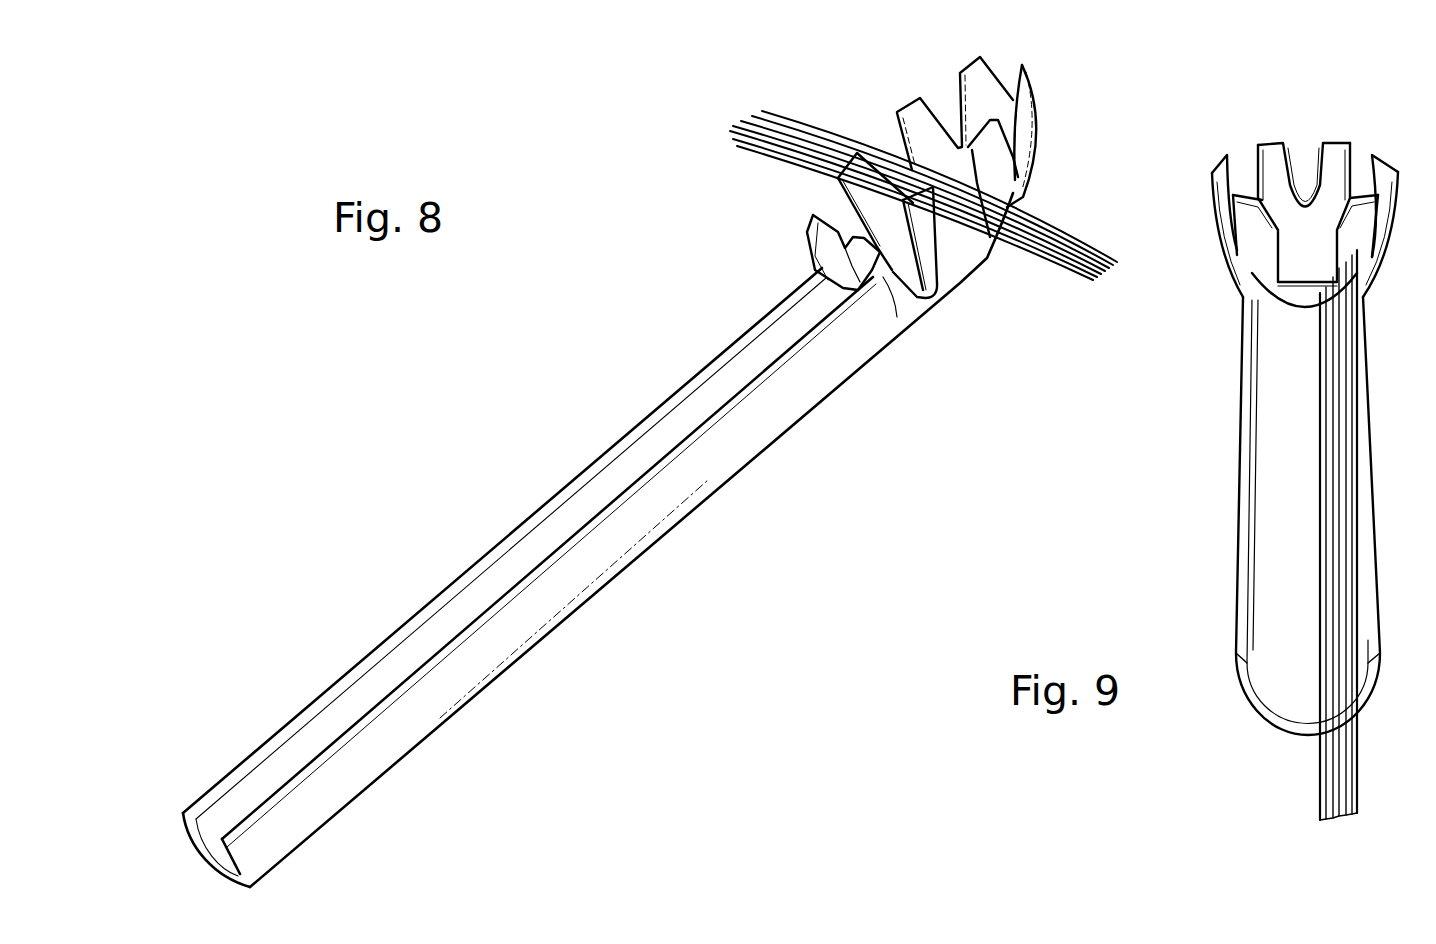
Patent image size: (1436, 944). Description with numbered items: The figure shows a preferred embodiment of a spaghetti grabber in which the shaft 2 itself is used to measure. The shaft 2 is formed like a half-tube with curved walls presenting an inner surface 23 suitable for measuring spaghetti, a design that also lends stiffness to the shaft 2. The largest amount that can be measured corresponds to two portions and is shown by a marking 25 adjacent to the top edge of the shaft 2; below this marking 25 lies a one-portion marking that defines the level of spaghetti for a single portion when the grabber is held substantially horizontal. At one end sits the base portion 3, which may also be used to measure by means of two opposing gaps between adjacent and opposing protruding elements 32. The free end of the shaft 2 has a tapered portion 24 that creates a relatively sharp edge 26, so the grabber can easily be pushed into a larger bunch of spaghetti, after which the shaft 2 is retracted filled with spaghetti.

In FIG. 8, the shaft 2 is at (670, 560).
In FIG. 8, the inner surface 23 is at (632, 462).
In FIG. 8, the marking 25 is at (450, 590).
In FIG. 9, the marking 25 is at (1255, 490).
In FIG. 8, the protruding elements 32 is at (820, 236).
In FIG. 9, the base portion 3 is at (1206, 237).
In FIG. 9, the tapered portion 24 is at (1252, 698).
In FIG. 9, the sharp edge 26 is at (1315, 735).